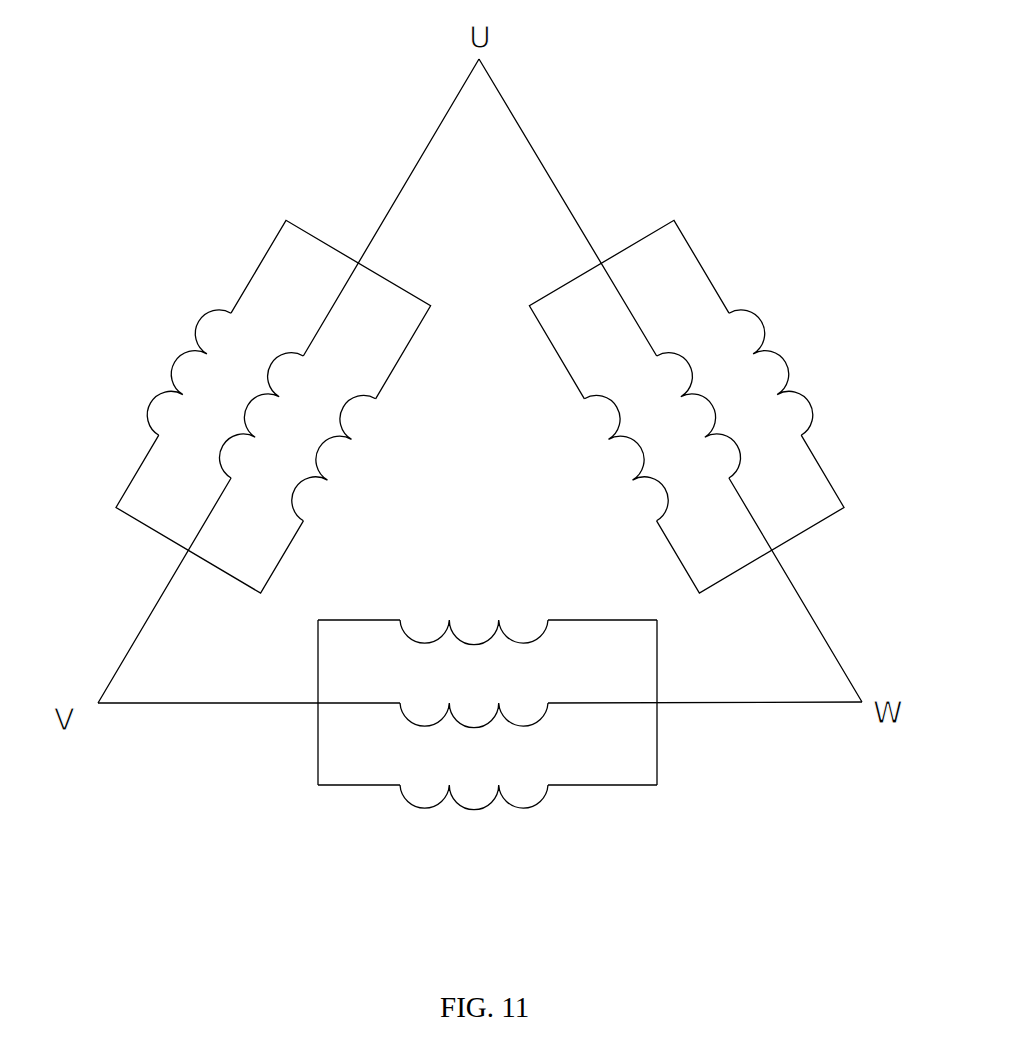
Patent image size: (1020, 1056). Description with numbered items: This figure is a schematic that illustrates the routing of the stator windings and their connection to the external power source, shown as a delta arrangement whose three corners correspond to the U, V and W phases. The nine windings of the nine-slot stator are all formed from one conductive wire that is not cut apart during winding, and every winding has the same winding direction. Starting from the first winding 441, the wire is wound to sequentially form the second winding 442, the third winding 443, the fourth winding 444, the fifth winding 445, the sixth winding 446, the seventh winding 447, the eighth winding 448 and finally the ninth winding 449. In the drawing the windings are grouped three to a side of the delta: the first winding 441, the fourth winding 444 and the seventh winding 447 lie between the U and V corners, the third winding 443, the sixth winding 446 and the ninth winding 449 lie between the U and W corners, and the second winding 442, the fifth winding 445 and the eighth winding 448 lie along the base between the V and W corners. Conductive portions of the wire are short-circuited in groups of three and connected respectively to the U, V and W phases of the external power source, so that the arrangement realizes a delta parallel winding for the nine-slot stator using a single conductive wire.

The first winding 441 is at (201, 320).
The fourth winding 444 is at (221, 446).
The seventh winding 447 is at (357, 393).
The third winding 443 is at (762, 320).
The sixth winding 446 is at (713, 405).
The ninth winding 449 is at (666, 496).
The second winding 442 is at (413, 642).
The fifth winding 445 is at (547, 720).
The eighth winding 448 is at (523, 808).